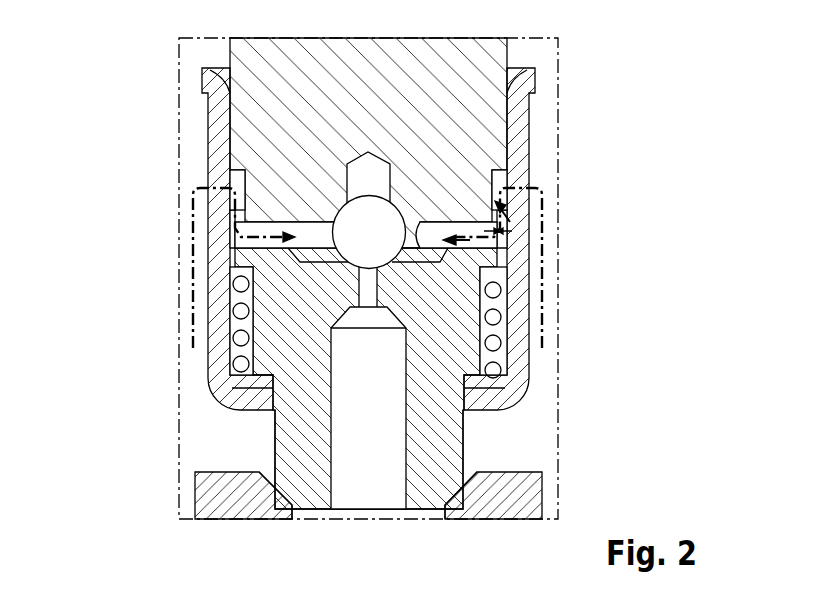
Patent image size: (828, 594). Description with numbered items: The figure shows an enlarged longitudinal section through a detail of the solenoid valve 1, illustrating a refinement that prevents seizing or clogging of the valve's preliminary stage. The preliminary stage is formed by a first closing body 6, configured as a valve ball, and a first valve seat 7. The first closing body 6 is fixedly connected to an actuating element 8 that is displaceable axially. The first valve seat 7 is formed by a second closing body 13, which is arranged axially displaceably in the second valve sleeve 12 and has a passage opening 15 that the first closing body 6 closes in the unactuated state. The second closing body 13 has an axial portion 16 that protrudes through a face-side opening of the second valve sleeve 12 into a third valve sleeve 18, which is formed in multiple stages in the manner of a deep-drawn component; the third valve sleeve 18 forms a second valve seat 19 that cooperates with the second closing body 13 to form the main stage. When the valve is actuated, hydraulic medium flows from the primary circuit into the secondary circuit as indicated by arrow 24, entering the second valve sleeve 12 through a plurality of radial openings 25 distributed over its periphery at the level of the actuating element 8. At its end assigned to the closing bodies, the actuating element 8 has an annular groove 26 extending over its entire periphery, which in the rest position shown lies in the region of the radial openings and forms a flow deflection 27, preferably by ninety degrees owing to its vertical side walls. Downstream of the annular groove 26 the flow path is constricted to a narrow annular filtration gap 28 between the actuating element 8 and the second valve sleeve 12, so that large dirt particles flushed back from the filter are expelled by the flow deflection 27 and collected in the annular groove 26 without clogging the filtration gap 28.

The solenoid valve 1 is at (114, 68).
The first closing body 6 is at (355, 235).
The first valve seat 7 is at (368, 295).
The actuating element 8 is at (465, 123).
The second valve sleeve 12 is at (505, 390).
The second closing body 13 is at (435, 368).
The passage opening 15 is at (470, 322).
The axial portion 16 is at (440, 445).
The third valve sleeve 18 is at (520, 503).
The second valve seat 19 is at (455, 495).
The arrow 24 is at (190, 320).
The radial openings 25 is at (220, 176).
The annular groove 26 is at (510, 180).
The flow deflection 27 is at (506, 206).
The filtration gap 28 is at (508, 234).